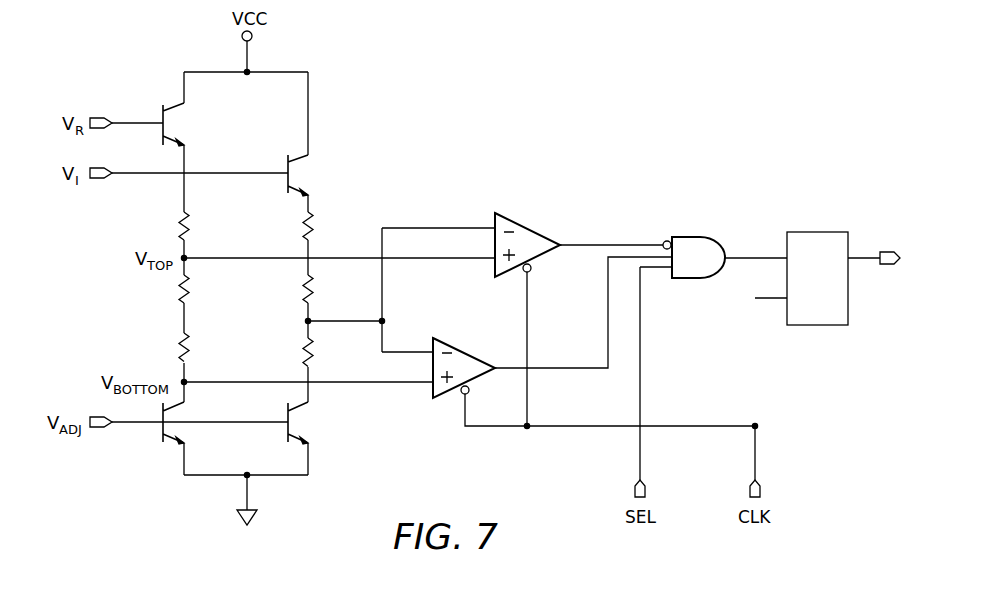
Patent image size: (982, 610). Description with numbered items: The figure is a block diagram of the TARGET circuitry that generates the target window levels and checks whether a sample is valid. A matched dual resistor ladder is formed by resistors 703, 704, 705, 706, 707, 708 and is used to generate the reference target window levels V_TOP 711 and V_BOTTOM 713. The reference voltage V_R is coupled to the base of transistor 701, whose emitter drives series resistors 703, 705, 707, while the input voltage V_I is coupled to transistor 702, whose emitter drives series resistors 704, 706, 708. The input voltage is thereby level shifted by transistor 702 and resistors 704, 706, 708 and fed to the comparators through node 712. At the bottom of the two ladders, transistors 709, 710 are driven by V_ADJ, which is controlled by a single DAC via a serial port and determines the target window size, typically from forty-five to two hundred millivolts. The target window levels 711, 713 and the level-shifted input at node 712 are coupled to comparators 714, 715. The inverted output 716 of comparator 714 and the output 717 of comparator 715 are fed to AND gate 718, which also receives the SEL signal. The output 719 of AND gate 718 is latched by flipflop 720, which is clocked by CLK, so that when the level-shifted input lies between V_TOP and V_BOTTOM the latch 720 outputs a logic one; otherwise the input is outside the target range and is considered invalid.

The transistor 701 is at (161, 108).
The transistor 702 is at (286, 168).
The resistor 703 is at (180, 222).
The resistor 704 is at (304, 222).
The resistor 705 is at (180, 285).
The resistor 706 is at (304, 287).
The resistor 707 is at (180, 350).
The resistor 708 is at (304, 348).
The transistor 709 is at (161, 437).
The transistor 710 is at (285, 430).
The target window level V_TOP 711 is at (365, 257).
The node 712 is at (385, 320).
The target window level V_BOTTOM 713 is at (370, 384).
The comparator 714 is at (543, 203).
The comparator 715 is at (466, 340).
The inverted output 716 is at (624, 244).
The output 717 is at (607, 312).
The AND gate 718 is at (690, 236).
The output 719 is at (755, 257).
The flipflop 720 is at (817, 231).